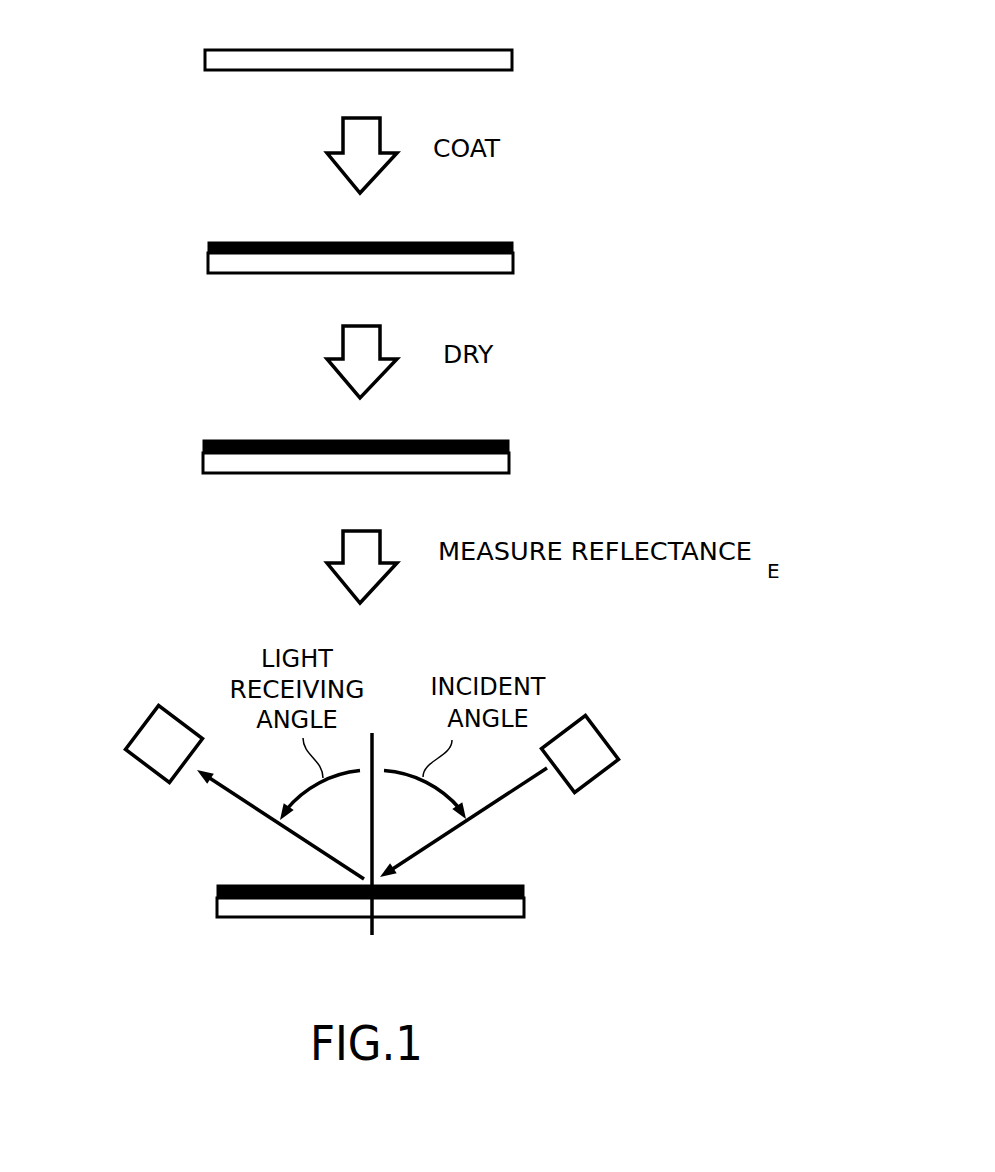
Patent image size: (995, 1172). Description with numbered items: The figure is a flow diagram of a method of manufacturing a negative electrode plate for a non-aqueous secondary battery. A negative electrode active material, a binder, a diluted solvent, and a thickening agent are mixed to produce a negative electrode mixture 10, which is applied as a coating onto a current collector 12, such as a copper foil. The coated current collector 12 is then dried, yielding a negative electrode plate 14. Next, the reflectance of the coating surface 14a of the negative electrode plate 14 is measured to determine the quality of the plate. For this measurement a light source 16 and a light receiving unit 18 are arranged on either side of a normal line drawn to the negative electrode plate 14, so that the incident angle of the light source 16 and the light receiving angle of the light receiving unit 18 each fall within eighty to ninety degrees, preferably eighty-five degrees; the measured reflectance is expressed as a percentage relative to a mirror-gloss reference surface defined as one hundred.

The negative electrode mixture 10 is at (513, 250).
The current collector 12 is at (205, 53).
The negative electrode plate 14 is at (524, 450).
The coating surface 14a is at (228, 440).
The light source 16 is at (606, 725).
The light receiving unit 18 is at (136, 728).